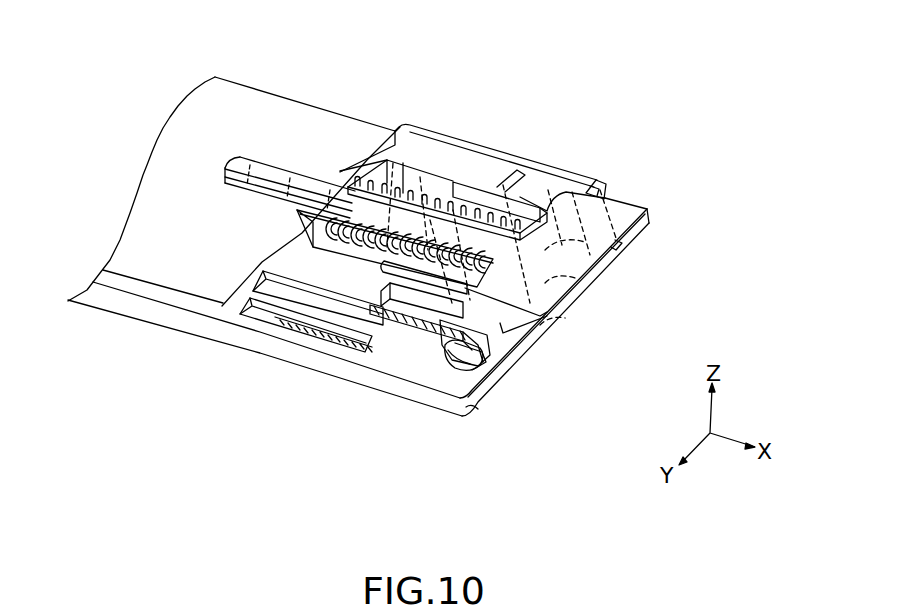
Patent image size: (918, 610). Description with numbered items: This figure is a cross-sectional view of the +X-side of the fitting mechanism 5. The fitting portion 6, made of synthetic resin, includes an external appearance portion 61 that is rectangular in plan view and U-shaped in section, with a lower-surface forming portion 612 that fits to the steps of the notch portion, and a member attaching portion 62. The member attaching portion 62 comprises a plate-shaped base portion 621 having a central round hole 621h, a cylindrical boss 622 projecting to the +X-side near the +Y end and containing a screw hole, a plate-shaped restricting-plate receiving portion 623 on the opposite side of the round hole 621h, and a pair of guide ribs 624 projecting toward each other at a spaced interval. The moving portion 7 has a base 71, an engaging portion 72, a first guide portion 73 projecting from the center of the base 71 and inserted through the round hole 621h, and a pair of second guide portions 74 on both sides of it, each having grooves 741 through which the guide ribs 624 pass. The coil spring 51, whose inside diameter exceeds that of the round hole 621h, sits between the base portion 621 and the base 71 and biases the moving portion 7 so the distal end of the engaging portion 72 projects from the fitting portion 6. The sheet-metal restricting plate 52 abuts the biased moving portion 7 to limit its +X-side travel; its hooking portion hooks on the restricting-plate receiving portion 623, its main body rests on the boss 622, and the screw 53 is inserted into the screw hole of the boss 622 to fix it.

The fitting mechanism 5 is at (627, 68).
The fitting portion 6 is at (194, 355).
The external appearance portion 61 is at (247, 347).
The lower-surface forming portion 612 is at (644, 240).
The member attaching portion 62 is at (327, 161).
The base portion 621 is at (258, 273).
The round hole 621h is at (327, 180).
The boss 622 is at (438, 330).
The restricting-plate receiving portion 623 is at (557, 190).
The guide ribs 624 is at (493, 177).
The moving portion 7 is at (545, 250).
The base 71 is at (540, 325).
The engaging portion 72 is at (545, 283).
The first guide portion 73 is at (387, 180).
The second guide portions 74 is at (512, 197).
The grooves 741 is at (455, 345).
The coil spring 51 is at (305, 240).
The restricting plate 52 is at (607, 184).
The screw 53 is at (472, 360).